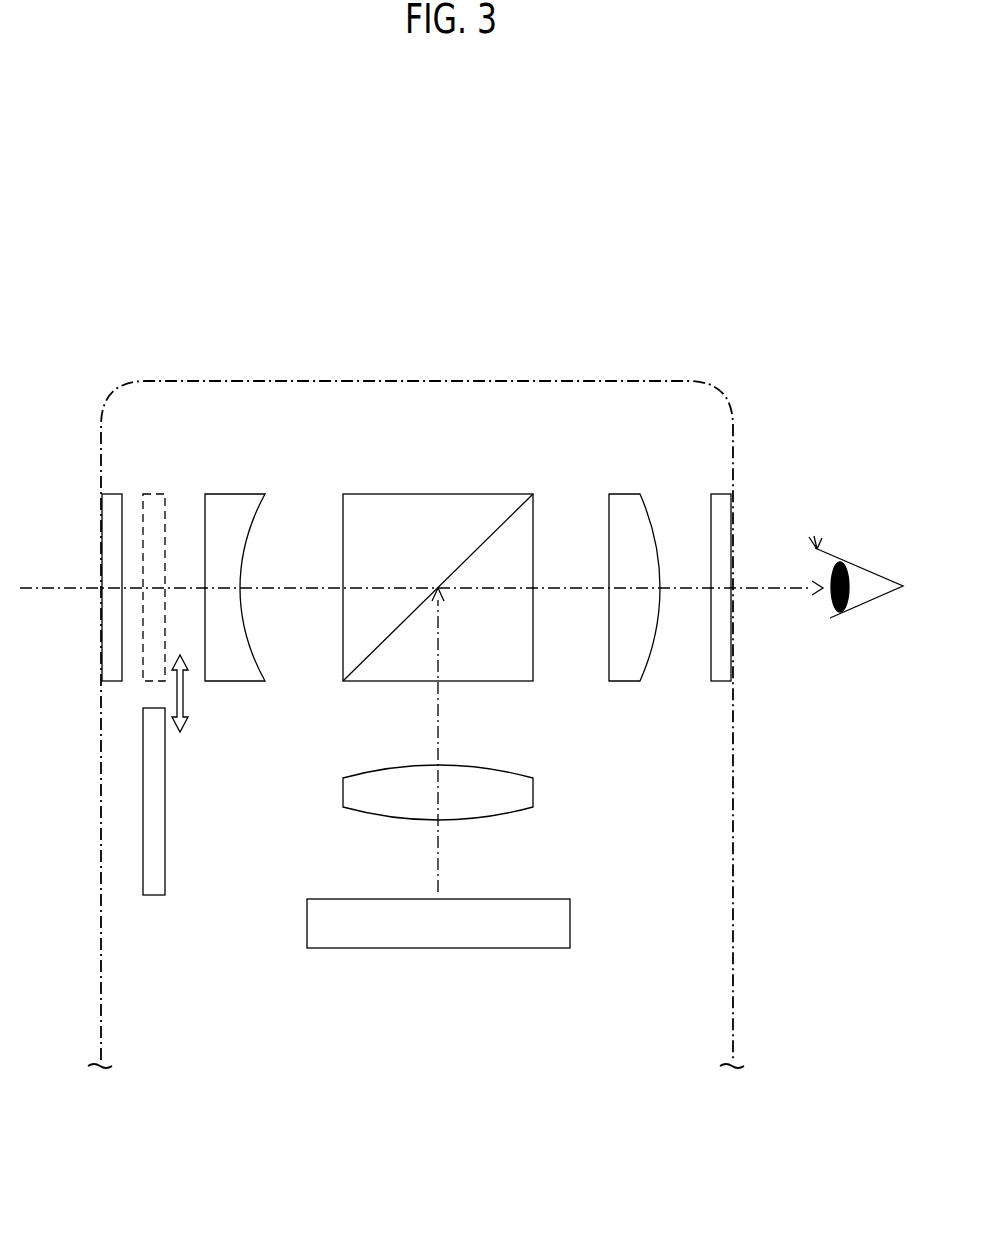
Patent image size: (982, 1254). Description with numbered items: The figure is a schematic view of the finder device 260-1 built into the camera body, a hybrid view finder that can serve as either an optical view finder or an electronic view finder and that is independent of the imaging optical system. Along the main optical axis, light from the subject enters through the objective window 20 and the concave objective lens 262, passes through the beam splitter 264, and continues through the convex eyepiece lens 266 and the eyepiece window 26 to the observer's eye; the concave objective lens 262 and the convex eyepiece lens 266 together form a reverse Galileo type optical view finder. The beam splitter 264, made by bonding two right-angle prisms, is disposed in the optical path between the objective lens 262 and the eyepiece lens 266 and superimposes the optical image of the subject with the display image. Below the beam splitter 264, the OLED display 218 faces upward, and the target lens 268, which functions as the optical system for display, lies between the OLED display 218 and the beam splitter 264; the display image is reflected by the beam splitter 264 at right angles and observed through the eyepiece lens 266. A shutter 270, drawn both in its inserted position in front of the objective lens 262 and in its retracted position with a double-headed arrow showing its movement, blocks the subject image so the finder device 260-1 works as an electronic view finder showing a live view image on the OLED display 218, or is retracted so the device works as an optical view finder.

The finder device 260-1 is at (558, 377).
The objective window 20 is at (113, 492).
The shutter 270 is at (165, 838).
The objective lens 262 is at (237, 493).
The beam splitter 264 is at (438, 493).
The eyepiece lens 266 is at (625, 493).
The eyepiece window 26 is at (718, 493).
The target lens 268 is at (474, 760).
The OLED display 218 is at (572, 922).